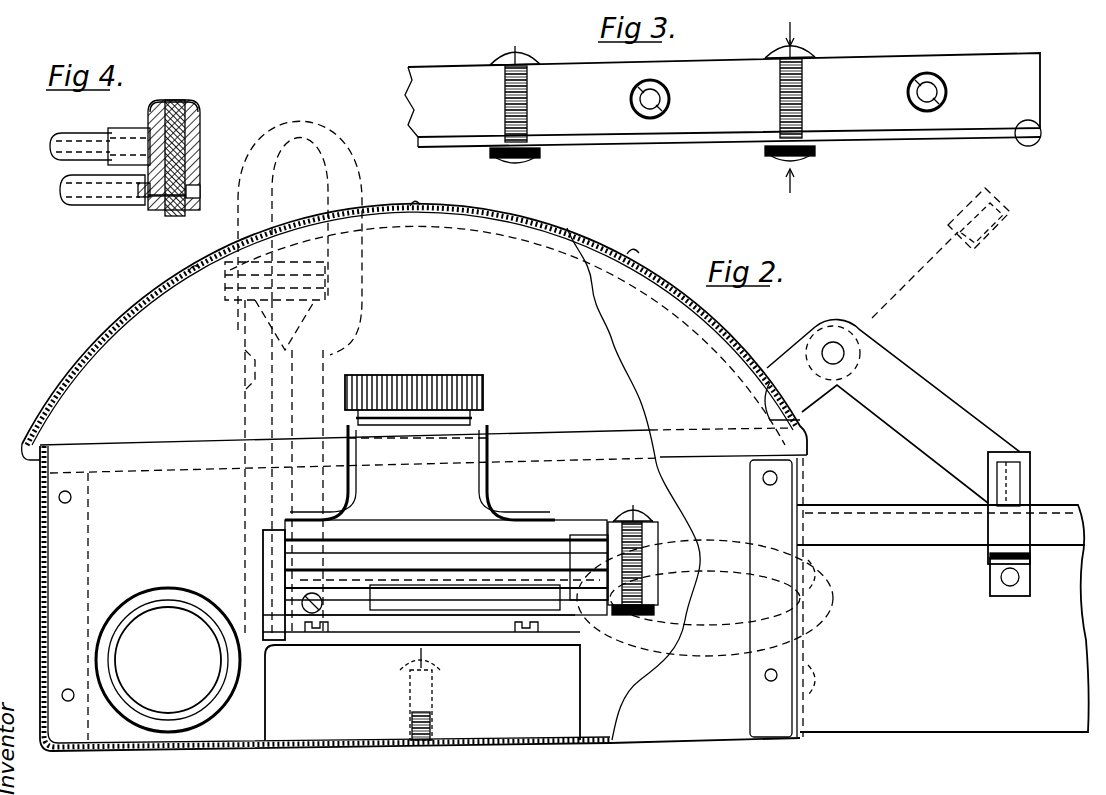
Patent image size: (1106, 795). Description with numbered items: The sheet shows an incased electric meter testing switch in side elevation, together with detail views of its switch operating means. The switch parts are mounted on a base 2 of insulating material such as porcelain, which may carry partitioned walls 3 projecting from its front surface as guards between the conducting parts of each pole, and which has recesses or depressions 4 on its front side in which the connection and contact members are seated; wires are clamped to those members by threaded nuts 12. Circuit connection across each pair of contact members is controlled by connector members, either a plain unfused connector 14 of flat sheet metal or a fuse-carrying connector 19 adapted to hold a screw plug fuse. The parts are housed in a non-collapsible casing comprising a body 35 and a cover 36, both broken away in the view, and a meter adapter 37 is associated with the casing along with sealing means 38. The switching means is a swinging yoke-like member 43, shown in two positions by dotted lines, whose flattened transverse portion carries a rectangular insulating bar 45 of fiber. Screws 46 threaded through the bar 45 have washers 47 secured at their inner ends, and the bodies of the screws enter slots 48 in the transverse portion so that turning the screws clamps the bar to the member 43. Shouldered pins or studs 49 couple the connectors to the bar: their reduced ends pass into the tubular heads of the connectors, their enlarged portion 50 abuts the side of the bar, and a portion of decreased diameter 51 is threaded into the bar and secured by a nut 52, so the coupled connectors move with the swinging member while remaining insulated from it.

In FIG. 2, the base 2 is at (510, 710).
In FIG. 2, the partitioned walls 3 is at (576, 522).
In FIG. 3, the recesses or depressions 4 is at (789, 110).
In FIG. 2, the threaded nuts 12 is at (313, 643).
In FIG. 2, the plain connector 14 is at (477, 557).
In FIG. 2, the fuse-carrying connector 19 is at (420, 447).
In FIG. 2, the body 35 is at (350, 747).
In FIG. 2, the cover 36 is at (137, 302).
In FIG. 2, the meter adapter 37 is at (963, 708).
In FIG. 2, the sealing means 38 is at (897, 392).
In FIG. 4, the yoke-like member 43 is at (86, 206).
In FIG. 4, the insulating bar 45 is at (199, 150).
In FIG. 3, the insulating bar 45 is at (712, 68).
In FIG. 2, the insulating bar 45 is at (665, 522).
In FIG. 4, the screws 46 is at (173, 216).
In FIG. 3, the screws 46 is at (528, 100).
In FIG. 2, the screws 46 is at (620, 520).
In FIG. 4, the washers 47 is at (160, 211).
In FIG. 3, the washers 47 is at (530, 158).
In FIG. 2, the washers 47 is at (645, 615).
In FIG. 4, the slots 48 is at (200, 191).
In FIG. 4, the shouldered pins or studs 49 is at (88, 142).
In FIG. 4, the enlarged portion 50 is at (121, 128).
In FIG. 4, the portion of decreased diameter 51 is at (198, 116).
In FIG. 3, the portion of decreased diameter 51 is at (649, 105).
In FIG. 3, the nut 52 is at (669, 99).